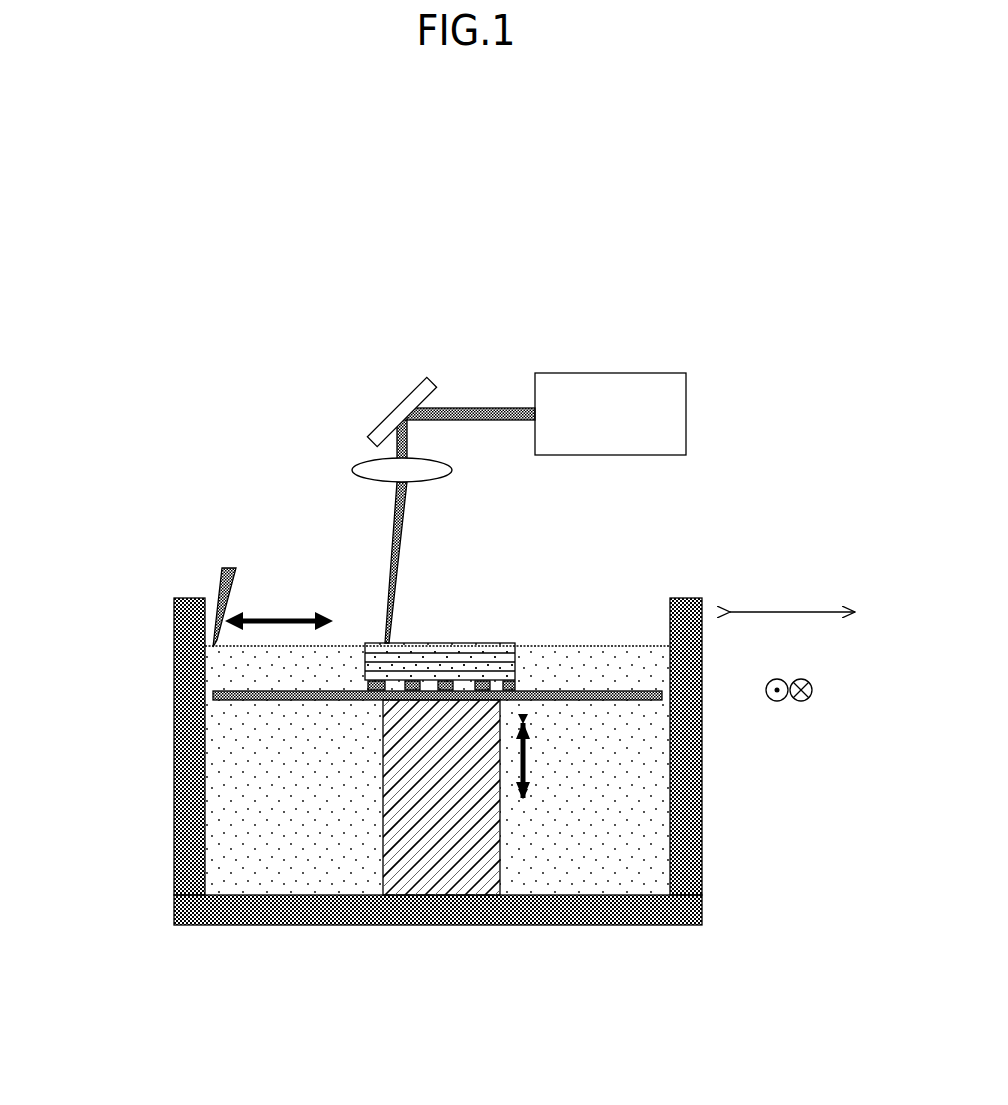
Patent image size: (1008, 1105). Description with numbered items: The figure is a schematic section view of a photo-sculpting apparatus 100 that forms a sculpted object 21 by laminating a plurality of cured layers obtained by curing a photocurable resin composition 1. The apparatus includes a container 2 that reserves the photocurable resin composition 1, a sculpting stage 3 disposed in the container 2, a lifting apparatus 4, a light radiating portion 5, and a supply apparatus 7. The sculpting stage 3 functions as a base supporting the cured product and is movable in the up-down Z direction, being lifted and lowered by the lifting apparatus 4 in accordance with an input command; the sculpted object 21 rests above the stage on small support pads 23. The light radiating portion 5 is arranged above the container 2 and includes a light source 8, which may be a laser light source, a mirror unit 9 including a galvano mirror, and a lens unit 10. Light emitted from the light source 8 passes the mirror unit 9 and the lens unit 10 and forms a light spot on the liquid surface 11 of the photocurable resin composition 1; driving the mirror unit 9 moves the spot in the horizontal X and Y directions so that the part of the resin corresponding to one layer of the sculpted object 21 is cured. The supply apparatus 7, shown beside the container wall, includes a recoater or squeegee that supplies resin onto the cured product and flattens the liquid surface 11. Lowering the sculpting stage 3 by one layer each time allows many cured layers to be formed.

The photo-sculpting apparatus 100 is at (566, 176).
The photocurable resin composition 1 is at (262, 783).
The container 2 is at (188, 783).
The sculpting stage 3 is at (545, 690).
The lifting apparatus 4 is at (427, 797).
The light radiating portion 5 is at (260, 249).
The supply apparatus 7 is at (220, 598).
The light source 8 is at (587, 373).
The mirror unit 9 is at (410, 393).
The lens unit 10 is at (358, 458).
The liquid surface 11 is at (607, 645).
The sculpted object 21 is at (443, 641).
The support 23 is at (478, 685).